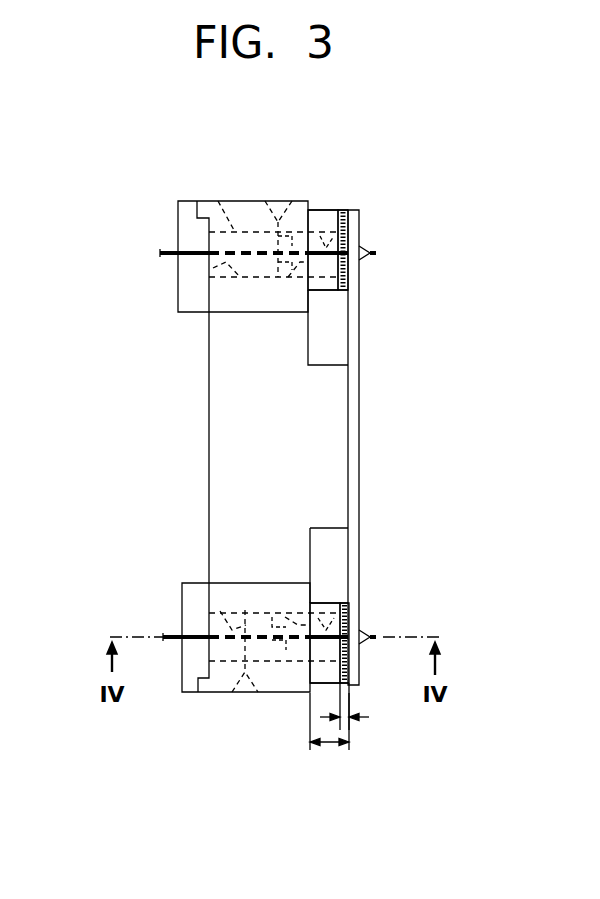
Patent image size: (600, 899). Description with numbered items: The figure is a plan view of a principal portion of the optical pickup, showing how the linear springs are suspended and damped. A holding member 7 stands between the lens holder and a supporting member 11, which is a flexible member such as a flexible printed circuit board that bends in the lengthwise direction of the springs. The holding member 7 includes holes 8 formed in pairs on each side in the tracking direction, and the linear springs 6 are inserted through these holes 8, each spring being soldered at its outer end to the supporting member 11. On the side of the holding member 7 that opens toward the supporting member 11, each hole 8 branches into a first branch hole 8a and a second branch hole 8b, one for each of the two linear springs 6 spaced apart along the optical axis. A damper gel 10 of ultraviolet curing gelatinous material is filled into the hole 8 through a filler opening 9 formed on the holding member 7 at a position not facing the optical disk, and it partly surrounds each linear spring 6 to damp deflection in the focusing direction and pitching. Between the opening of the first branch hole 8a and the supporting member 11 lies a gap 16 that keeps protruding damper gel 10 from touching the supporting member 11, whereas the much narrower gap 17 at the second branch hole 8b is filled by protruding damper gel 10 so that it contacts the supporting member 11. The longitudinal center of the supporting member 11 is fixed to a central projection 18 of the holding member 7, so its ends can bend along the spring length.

The linear spring 6 is at (162, 252).
The holding member 7 is at (209, 485).
The hole 8 is at (215, 262).
The first branch hole 8a is at (350, 273).
The second branch hole 8b is at (330, 233).
The filler opening 9 is at (278, 218).
The damper gel 10 is at (344, 211).
The supporting member 11 is at (361, 455).
The gap 16 is at (322, 746).
The gap 17 is at (351, 718).
The central projection 18 is at (325, 365).